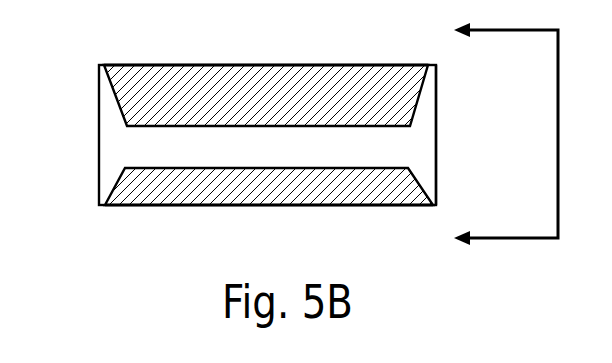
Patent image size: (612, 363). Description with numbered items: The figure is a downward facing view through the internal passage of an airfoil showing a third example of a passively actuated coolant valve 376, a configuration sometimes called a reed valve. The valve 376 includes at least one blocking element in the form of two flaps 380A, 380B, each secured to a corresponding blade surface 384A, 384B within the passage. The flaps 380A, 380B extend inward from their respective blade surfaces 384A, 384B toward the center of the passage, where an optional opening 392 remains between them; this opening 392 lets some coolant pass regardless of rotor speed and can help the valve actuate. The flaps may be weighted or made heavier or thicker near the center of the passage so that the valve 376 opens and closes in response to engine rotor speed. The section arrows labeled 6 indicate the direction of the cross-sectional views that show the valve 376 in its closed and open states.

The passively actuated coolant valve 376 is at (115, 147).
The flap 380B is at (312, 90).
The blade surface 384B is at (208, 65).
The flap 380A is at (153, 185).
The blade surface 384A is at (296, 206).
The opening 392 is at (253, 155).
The section view indicator for FIG. 6 is at (496, 134).